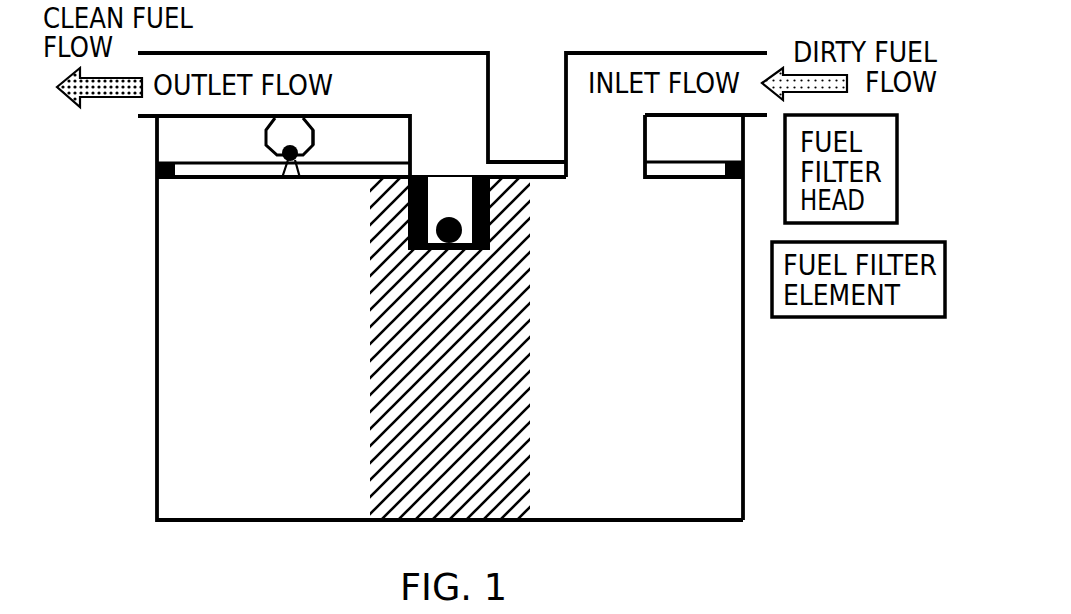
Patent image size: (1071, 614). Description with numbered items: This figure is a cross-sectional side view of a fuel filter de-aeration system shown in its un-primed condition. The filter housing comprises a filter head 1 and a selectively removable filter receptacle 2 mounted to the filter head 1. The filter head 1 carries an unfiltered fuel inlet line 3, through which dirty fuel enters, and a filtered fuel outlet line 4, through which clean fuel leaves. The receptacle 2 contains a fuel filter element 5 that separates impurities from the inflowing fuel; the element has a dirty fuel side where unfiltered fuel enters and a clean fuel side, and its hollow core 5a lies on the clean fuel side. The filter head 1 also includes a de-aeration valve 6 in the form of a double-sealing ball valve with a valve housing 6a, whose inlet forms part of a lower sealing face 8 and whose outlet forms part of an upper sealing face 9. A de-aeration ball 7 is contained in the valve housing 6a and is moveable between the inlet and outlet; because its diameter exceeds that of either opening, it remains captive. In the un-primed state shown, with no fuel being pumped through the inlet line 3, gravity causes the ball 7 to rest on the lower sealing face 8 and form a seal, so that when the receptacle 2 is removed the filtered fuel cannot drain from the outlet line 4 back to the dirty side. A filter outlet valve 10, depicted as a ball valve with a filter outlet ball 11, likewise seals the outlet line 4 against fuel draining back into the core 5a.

The filter head 1 is at (718, 126).
The filter receptacle 2 is at (743, 353).
The unfiltered fuel inlet line 3 is at (760, 63).
The filtered fuel outlet line 4 is at (281, 63).
The fuel filter element 5 is at (720, 497).
The hollow core 5a is at (402, 498).
The de-aeration valve 6 is at (267, 147).
The valve housing 6a is at (317, 145).
The de-aeration ball 7 is at (300, 178).
The lower sealing face 8 is at (282, 178).
The upper sealing face 9 is at (293, 116).
The filter outlet valve 10 is at (478, 177).
The filter outlet ball 11 is at (493, 233).